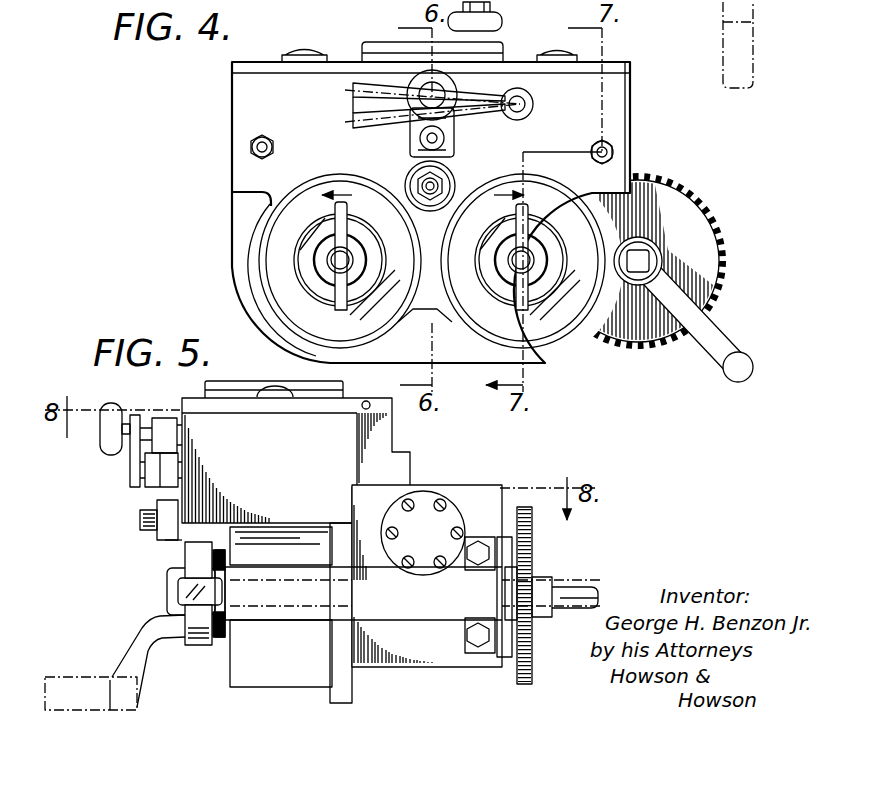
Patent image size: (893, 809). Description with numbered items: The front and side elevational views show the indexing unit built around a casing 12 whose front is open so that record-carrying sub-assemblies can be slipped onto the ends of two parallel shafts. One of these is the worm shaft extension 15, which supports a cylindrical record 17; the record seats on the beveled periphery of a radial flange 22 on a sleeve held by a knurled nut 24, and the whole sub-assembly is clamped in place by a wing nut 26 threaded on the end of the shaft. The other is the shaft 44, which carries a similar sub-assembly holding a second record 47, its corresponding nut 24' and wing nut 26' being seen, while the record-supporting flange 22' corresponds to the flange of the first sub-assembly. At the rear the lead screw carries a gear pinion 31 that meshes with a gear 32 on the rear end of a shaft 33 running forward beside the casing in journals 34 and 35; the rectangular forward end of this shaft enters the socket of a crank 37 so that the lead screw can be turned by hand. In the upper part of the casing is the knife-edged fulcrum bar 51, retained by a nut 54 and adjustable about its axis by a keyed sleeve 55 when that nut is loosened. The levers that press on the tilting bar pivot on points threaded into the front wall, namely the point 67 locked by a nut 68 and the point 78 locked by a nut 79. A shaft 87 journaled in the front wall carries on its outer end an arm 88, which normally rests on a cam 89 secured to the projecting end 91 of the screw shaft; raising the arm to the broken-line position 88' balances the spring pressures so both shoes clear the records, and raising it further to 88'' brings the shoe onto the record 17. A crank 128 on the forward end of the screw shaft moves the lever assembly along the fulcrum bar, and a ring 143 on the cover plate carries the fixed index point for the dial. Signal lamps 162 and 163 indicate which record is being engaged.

In FIG. 4, the casing 12 is at (630, 129).
In FIG. 5, the casing 12 is at (292, 483).
In FIG. 4, the worm shaft extension 15 is at (508, 261).
In FIG. 4, the cylindrical record 17 is at (557, 330).
In FIG. 4, the radial flange 22 is at (523, 268).
In FIG. 4, the record-supporting flange 22' is at (363, 279).
In FIG. 4, the nut 24 is at (504, 256).
In FIG. 5, the nut 24 is at (205, 614).
In FIG. 4, the nut 24' is at (355, 256).
In FIG. 4, the wing nut 26 is at (525, 254).
In FIG. 5, the wing nut 26 is at (181, 606).
In FIG. 4, the wing nut 26' is at (332, 254).
In FIG. 5, the gear pinion 31 is at (530, 576).
In FIG. 4, the gear 32 is at (706, 227).
In FIG. 5, the gear 32 is at (517, 683).
In FIG. 4, the shaft 33 is at (650, 260).
In FIG. 5, the shaft 33 is at (180, 588).
In FIG. 4, the journal 34 is at (656, 240).
In FIG. 5, the journal 34 is at (283, 622).
In FIG. 5, the journal 35 is at (470, 614).
In FIG. 4, the crank 37 is at (716, 4).
In FIG. 5, the crank 37 is at (158, 617).
In FIG. 4, the shaft 44 is at (334, 270).
In FIG. 4, the record 47 is at (259, 265).
In FIG. 4, the bar 51 is at (419, 182).
In FIG. 5, the bar 51 is at (140, 518).
In FIG. 4, the retaining nut 54 is at (449, 184).
In FIG. 5, the retaining nut 54 is at (145, 528).
In FIG. 4, the sleeve 55 is at (448, 173).
In FIG. 5, the sleeve 55 is at (168, 538).
In FIG. 4, the pivot point 67 is at (262, 134).
In FIG. 4, the nut 68 is at (251, 147).
In FIG. 4, the pivot point 78 is at (595, 147).
In FIG. 4, the nut 79 is at (613, 151).
In FIG. 4, the shaft 87 is at (534, 104).
In FIG. 4, the arm 88 is at (340, 122).
In FIG. 5, the arm 88 is at (161, 414).
In FIG. 4, the arm position 88' is at (416, 113).
In FIG. 4, the arm position 88'' is at (416, 88).
In FIG. 4, the cam 89 is at (412, 142).
In FIG. 5, the cam 89 is at (140, 472).
In FIG. 4, the forwardly projecting end of screw shaft 91 is at (440, 12).
In FIG. 4, the crank 128 is at (495, 12).
In FIG. 5, the crank 128 is at (130, 441).
In FIG. 4, the ring 143 is at (367, 48).
In FIG. 5, the ring 143 is at (216, 381).
In FIG. 4, the signal lamp 162 is at (300, 54).
In FIG. 4, the signal lamp 163 is at (556, 53).
In FIG. 5, the signal lamp 163 is at (274, 383).